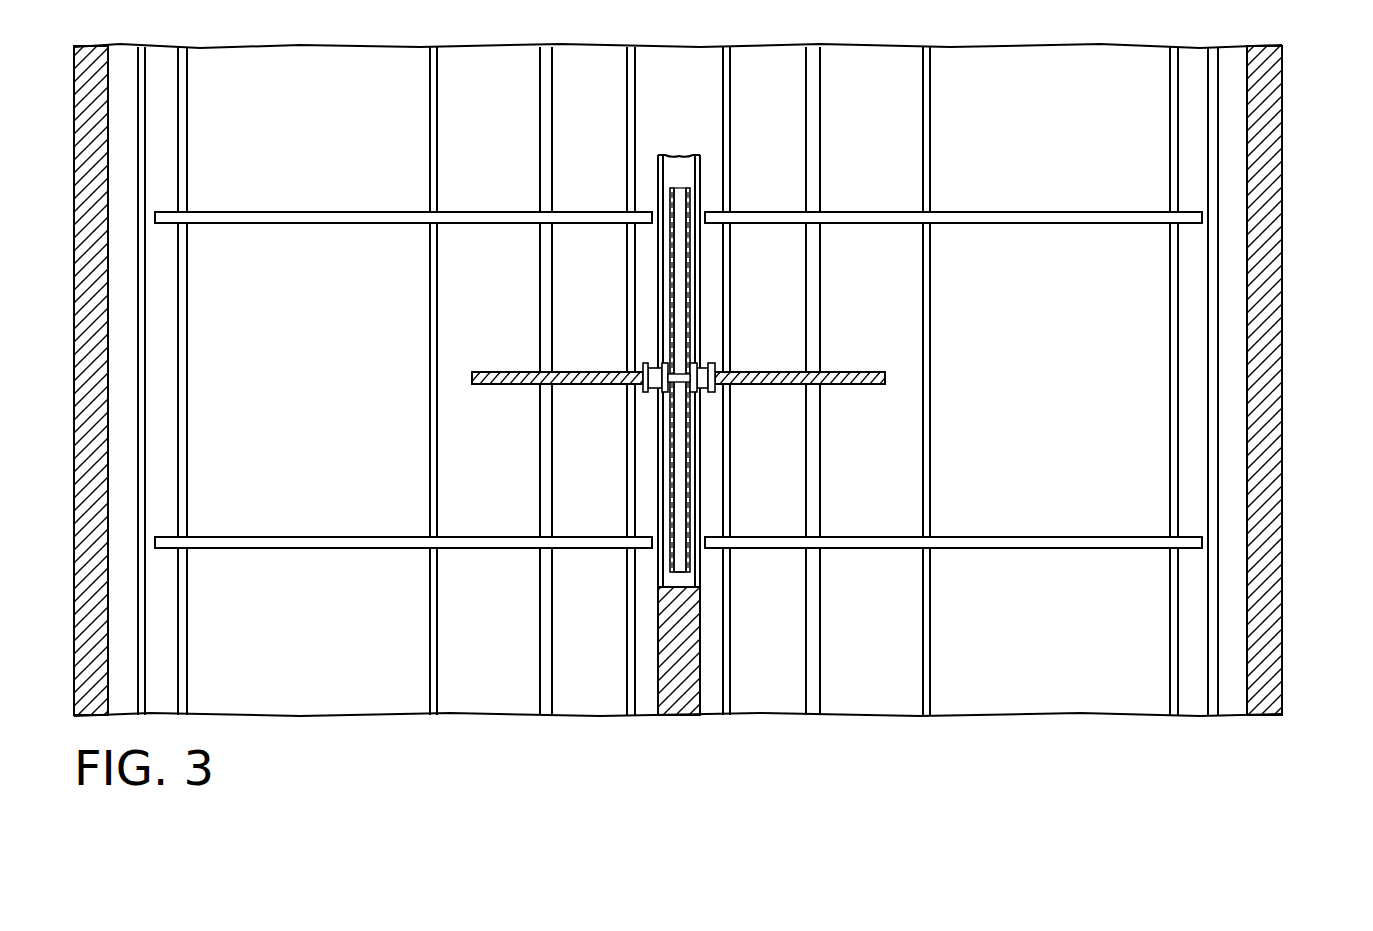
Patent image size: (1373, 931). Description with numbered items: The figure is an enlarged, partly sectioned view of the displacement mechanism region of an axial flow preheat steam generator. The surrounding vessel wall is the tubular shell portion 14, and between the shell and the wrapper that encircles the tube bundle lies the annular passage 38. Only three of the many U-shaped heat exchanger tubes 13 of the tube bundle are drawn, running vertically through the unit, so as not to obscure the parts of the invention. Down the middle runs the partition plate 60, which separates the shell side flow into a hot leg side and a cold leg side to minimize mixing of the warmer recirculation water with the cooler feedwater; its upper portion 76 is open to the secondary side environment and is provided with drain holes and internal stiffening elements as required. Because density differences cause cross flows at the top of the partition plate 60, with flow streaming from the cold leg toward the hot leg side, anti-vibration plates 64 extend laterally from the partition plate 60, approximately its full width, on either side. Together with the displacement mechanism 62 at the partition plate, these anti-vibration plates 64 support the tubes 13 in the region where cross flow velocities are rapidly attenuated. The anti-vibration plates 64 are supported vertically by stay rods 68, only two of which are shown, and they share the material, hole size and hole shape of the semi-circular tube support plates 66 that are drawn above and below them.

The U-shaped heat exchanger tubes 13 is at (187, 120).
The tubular shell portion 14 is at (1282, 345).
The annular passage 38 is at (1217, 248).
The partition plate 60 is at (700, 283).
The displacement mechanism 62 is at (693, 455).
The anti-vibration plates 64 is at (527, 384).
The semi-circular tube support plates 66 is at (237, 212).
The stay rods 68 is at (552, 97).
The upper portion of the partition plate 76 is at (679, 167).